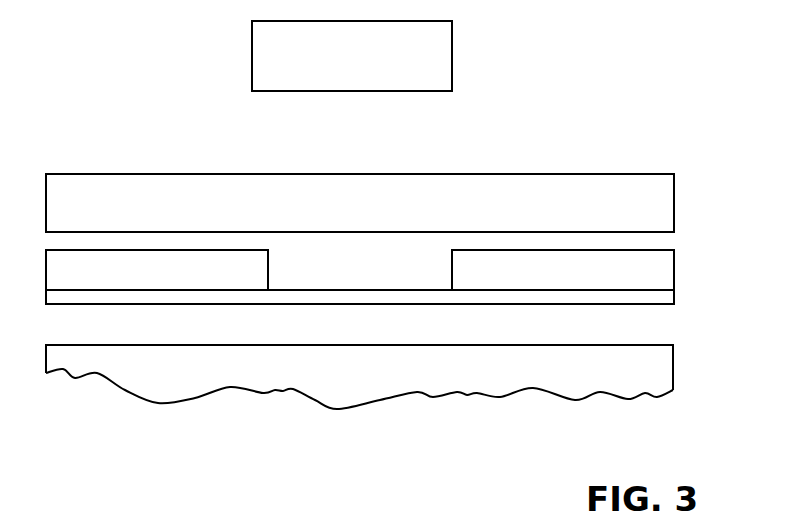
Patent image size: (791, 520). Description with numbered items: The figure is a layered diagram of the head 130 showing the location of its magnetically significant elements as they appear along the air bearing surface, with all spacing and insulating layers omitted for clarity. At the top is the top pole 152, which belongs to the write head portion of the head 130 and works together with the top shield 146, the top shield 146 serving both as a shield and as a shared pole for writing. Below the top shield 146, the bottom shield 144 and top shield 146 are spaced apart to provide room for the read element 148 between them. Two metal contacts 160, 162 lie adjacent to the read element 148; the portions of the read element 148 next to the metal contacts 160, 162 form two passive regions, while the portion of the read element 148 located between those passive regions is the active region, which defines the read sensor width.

The head 130 is at (573, 138).
The bottom shield 144 is at (375, 383).
The top shield 146 is at (372, 213).
The read element 148 is at (663, 297).
The top pole 152 is at (352, 56).
The metal contact 160 is at (167, 282).
The metal contact 162 is at (572, 282).